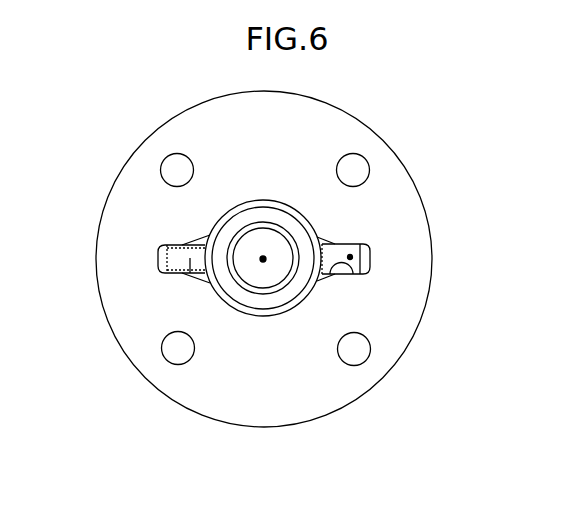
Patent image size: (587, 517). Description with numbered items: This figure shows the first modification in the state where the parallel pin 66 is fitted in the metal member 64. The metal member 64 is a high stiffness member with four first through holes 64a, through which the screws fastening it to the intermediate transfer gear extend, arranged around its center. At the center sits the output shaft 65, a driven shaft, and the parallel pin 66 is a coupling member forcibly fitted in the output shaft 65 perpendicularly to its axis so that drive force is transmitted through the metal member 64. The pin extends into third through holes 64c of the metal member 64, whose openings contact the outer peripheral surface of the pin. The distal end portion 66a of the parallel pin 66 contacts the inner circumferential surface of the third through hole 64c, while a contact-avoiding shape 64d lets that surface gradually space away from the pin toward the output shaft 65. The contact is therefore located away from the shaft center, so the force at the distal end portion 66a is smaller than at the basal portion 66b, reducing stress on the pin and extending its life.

The metal member 64 is at (431, 288).
The first through holes 64a is at (175, 170).
The third through holes 64c is at (355, 275).
The contact-avoiding shape 64d is at (335, 245).
The output shaft 65 is at (263, 262).
The parallel pin 66 is at (353, 256).
The distal end portion 66a is at (166, 258).
The basal portion 66b is at (190, 258).